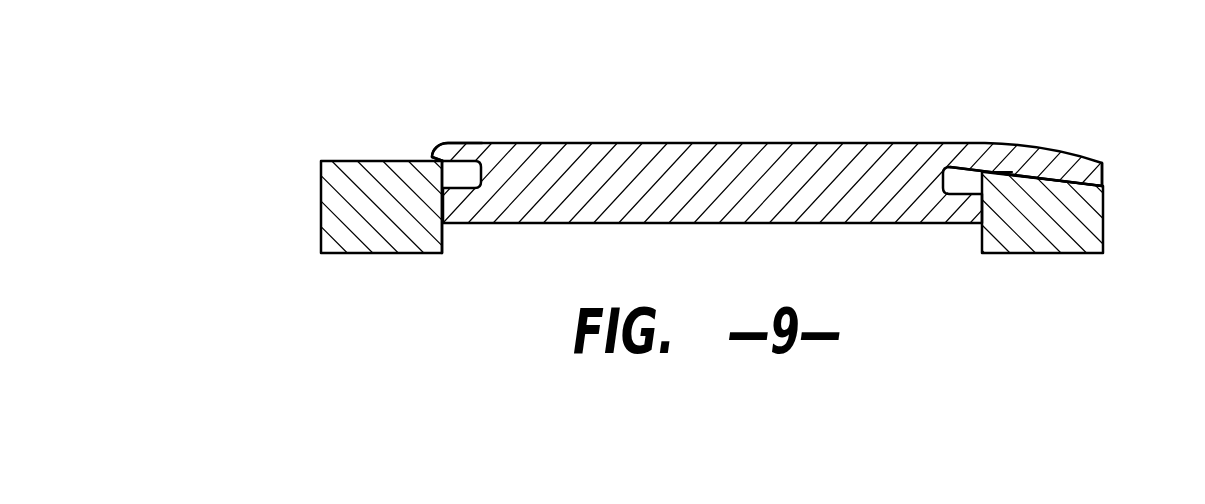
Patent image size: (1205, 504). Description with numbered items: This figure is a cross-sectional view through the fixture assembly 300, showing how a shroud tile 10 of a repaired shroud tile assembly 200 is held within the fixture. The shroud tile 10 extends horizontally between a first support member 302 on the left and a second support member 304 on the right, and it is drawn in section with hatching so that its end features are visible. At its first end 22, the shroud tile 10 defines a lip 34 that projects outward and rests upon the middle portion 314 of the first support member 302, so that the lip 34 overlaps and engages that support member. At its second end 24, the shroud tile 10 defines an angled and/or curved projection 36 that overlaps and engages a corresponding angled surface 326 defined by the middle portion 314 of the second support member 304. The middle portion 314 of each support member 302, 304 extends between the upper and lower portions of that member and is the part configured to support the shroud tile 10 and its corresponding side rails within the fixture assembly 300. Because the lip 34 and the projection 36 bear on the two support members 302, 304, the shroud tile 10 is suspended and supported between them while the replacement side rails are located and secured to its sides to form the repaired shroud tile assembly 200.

The fixture assembly 300 is at (985, 90).
The repaired shroud tile assembly 200 is at (800, 145).
The shroud tile 10 is at (714, 194).
The lip 34 is at (438, 153).
The angled and/or curved projection 36 is at (1020, 145).
The first end 22 is at (442, 205).
The second end 24 is at (1104, 172).
The first support member 302 is at (321, 213).
The second support member 304 is at (1105, 226).
The middle portion 314 is at (1002, 232).
The angled surface 326 is at (1064, 177).